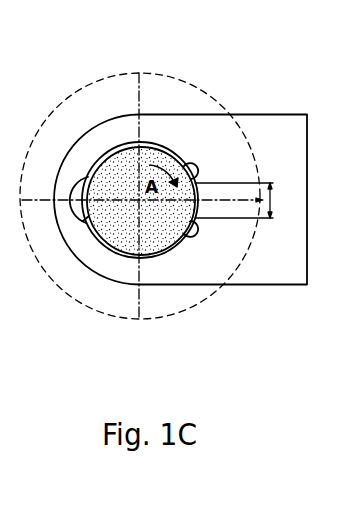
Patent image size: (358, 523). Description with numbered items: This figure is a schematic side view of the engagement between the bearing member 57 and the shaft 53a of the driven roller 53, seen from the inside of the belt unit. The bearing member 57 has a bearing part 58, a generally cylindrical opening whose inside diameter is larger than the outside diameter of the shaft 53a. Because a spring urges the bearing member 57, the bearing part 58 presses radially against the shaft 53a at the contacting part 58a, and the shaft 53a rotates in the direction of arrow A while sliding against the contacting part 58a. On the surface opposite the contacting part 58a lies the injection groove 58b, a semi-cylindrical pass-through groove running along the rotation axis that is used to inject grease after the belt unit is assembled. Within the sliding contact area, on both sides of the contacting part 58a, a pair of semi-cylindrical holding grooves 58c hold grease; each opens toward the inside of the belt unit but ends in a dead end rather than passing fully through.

The driven roller 53 is at (180, 83).
The shaft 53a is at (108, 152).
The bearing member 57 is at (307, 262).
The bearing part 58 is at (117, 258).
The contacting part 58a is at (250, 200).
The injection groove 58b is at (62, 238).
The holding grooves 58c is at (199, 168).